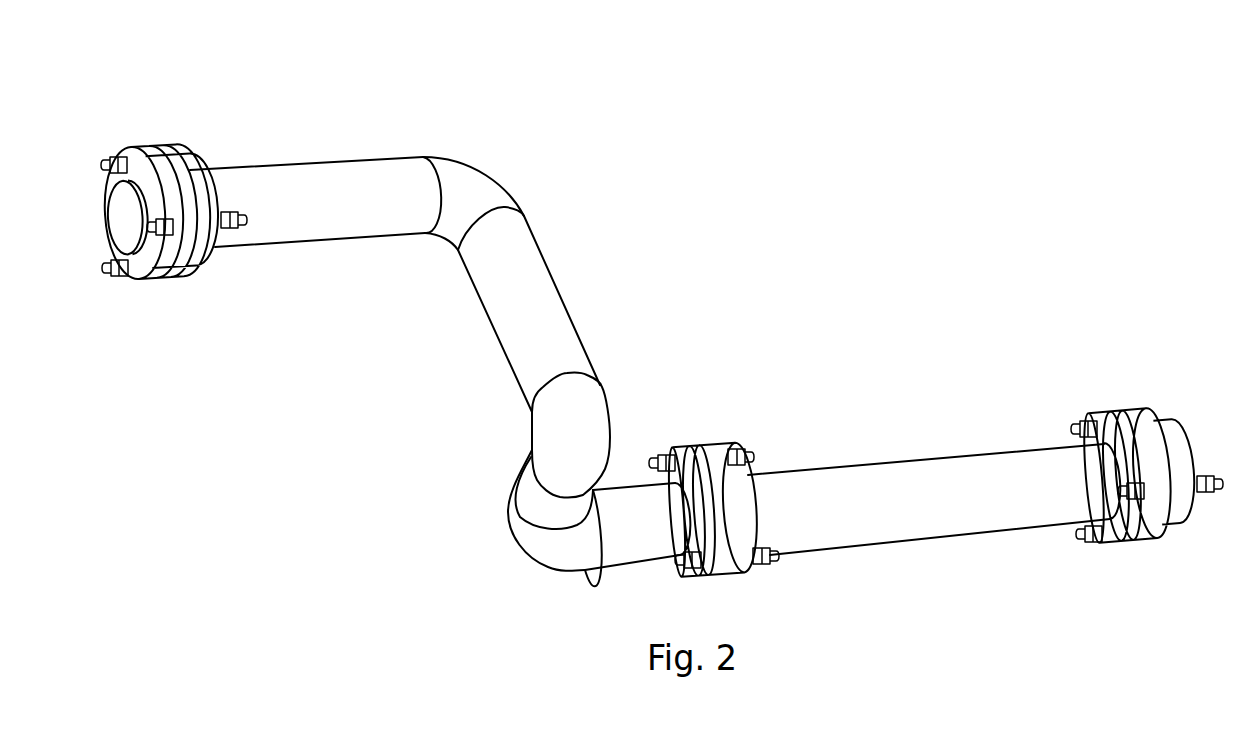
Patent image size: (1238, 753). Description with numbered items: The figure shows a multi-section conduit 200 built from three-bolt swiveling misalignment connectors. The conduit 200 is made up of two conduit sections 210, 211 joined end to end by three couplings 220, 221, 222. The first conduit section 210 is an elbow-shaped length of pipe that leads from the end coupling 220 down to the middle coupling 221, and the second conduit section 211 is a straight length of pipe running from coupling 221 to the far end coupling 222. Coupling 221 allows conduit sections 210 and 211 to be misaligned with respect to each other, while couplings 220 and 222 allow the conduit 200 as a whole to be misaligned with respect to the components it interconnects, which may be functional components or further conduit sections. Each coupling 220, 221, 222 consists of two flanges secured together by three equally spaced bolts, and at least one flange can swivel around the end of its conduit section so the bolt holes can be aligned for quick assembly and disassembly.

The conduit 200 is at (662, 316).
The conduit section 210 is at (547, 254).
The conduit section 211 is at (903, 462).
The coupling 220 is at (176, 129).
The coupling 221 is at (722, 430).
The coupling 222 is at (1094, 397).